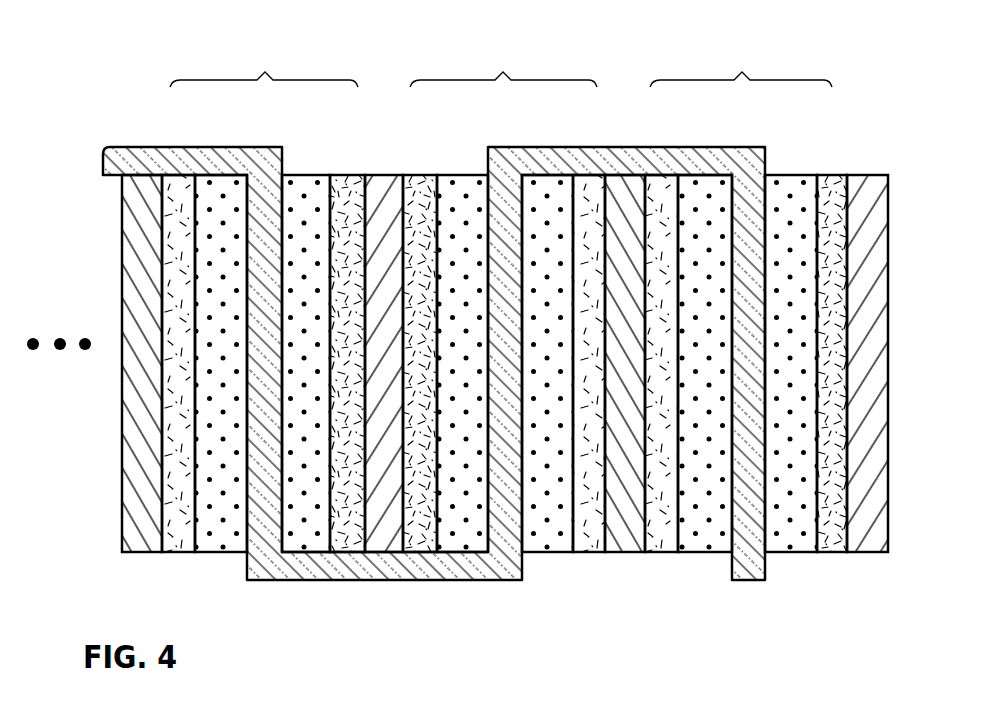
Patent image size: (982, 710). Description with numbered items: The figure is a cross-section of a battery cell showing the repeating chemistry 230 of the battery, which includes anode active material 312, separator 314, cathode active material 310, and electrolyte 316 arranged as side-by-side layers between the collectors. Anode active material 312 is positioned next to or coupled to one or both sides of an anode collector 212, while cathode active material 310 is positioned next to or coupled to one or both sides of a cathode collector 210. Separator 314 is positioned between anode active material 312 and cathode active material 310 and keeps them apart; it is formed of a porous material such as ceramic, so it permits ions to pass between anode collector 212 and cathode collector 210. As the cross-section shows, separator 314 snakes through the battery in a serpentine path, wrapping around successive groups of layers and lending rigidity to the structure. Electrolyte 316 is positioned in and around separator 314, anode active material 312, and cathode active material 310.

The cathode collector 210 is at (378, 174).
The anode collector 212 is at (142, 554).
The chemistry 230 is at (501, 65).
The cathode active material 310 is at (349, 174).
The anode active material 312 is at (178, 554).
The separator 314 is at (220, 148).
The electrolyte 316 is at (315, 174).